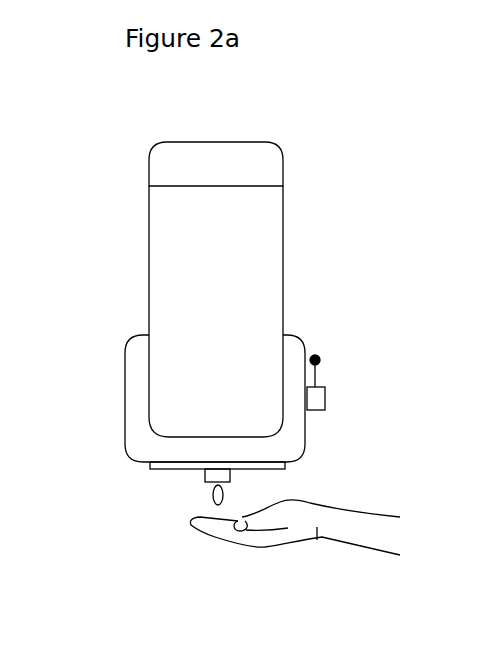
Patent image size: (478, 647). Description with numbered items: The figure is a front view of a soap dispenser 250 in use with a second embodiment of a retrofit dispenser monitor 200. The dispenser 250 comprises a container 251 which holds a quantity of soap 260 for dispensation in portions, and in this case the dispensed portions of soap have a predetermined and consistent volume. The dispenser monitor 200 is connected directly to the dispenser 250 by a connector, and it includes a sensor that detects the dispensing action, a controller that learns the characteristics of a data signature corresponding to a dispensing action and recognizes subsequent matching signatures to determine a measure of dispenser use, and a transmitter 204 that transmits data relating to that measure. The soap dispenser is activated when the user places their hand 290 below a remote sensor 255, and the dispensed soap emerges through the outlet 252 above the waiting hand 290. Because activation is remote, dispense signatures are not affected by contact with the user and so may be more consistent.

The dispenser 250 is at (337, 203).
The container 251 is at (180, 160).
The soap 260 is at (192, 236).
The dispenser monitor 200 is at (325, 397).
The transmitter 204 is at (320, 358).
The remote sensor 255 is at (182, 465).
The nozzle 252 is at (210, 476).
The hand 290 is at (317, 540).